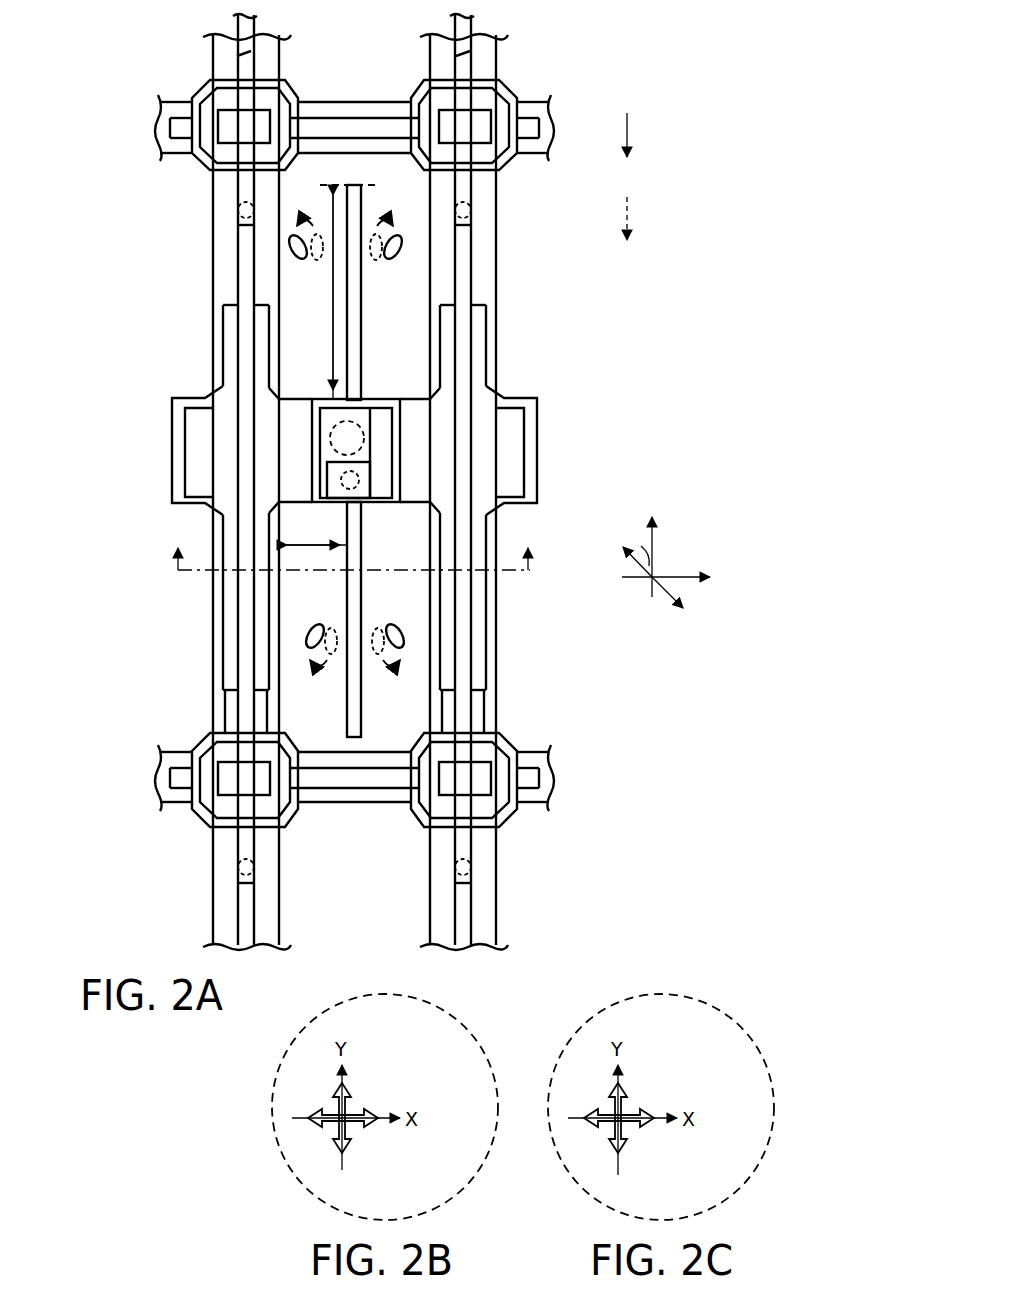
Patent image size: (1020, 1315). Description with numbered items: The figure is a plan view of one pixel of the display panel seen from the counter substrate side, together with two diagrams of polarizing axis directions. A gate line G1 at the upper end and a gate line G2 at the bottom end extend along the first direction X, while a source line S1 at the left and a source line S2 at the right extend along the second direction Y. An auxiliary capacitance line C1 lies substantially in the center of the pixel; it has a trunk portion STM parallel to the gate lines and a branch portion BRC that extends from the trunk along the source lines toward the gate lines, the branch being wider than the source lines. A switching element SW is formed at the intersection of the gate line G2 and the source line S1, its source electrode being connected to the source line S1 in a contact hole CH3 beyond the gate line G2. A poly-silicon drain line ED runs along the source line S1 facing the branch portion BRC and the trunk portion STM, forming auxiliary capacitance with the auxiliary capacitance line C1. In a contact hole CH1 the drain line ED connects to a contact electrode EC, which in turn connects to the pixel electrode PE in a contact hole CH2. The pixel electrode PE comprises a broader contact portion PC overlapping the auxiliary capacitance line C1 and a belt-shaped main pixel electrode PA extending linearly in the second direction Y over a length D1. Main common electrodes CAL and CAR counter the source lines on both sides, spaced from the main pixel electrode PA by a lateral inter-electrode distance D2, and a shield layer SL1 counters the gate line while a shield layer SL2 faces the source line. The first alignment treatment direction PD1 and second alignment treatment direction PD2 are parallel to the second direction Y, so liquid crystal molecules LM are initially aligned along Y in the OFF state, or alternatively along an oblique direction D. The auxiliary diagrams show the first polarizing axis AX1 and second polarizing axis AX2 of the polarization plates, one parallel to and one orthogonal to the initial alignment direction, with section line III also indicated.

In FIG. 2A, the gate line G1 is at (345, 126).
In FIG. 2A, the gate line G2 is at (332, 780).
In FIG. 2A, the shield layer SL1 is at (512, 106).
In FIG. 2A, the shield layer SL2 is at (227, 702).
In FIG. 2A, the main common electrode CAL is at (246, 711).
In FIG. 2A, the main common electrode CAR is at (463, 711).
In FIG. 2A, the source line S1 is at (242, 268).
In FIG. 2A, the source line S2 is at (466, 268).
In FIG. 2A, the switching element SW is at (153, 770).
In FIG. 2A, the branch portion BRC is at (223, 305).
In FIG. 2A, the drain line ED is at (225, 611).
In FIG. 2A, the trunk portion STM is at (194, 398).
In FIG. 2A, the auxiliary capacitance line C1 is at (172, 420).
In FIG. 2A, the contact portion PC is at (393, 399).
In FIG. 2A, the contact electrode EC is at (387, 496).
In FIG. 2A, the contact hole CH1 is at (340, 430).
In FIG. 2A, the contact hole CH2 is at (358, 489).
In FIG. 2A, the contact hole CH3 is at (238, 210).
In FIG. 2A, the pixel electrode PE is at (366, 322).
In FIG. 2A, the main pixel electrode PA is at (362, 208).
In FIG. 2A, the length of the main pixel electrode D1 is at (318, 292).
In FIG. 2A, the lateral inter-electrode distance D2 is at (313, 532).
In FIG. 2A, the section line III is at (352, 555).
In FIG. 2A, the liquid crystal molecule LM is at (536, 443).
In FIG. 2A, the first alignment treatment direction PD1 is at (664, 217).
In FIG. 2A, the second alignment treatment direction PD2 is at (630, 130).
In FIG. 2A, the oblique direction D is at (634, 553).
In FIG. 2B, the first polarizing axis AX1 is at (358, 1124).
In FIG. 2C, the first polarizing axis AX1 is at (627, 1103).
In FIG. 2B, the second polarizing axis AX2 is at (350, 1103).
In FIG. 2C, the second polarizing axis AX2 is at (635, 1124).